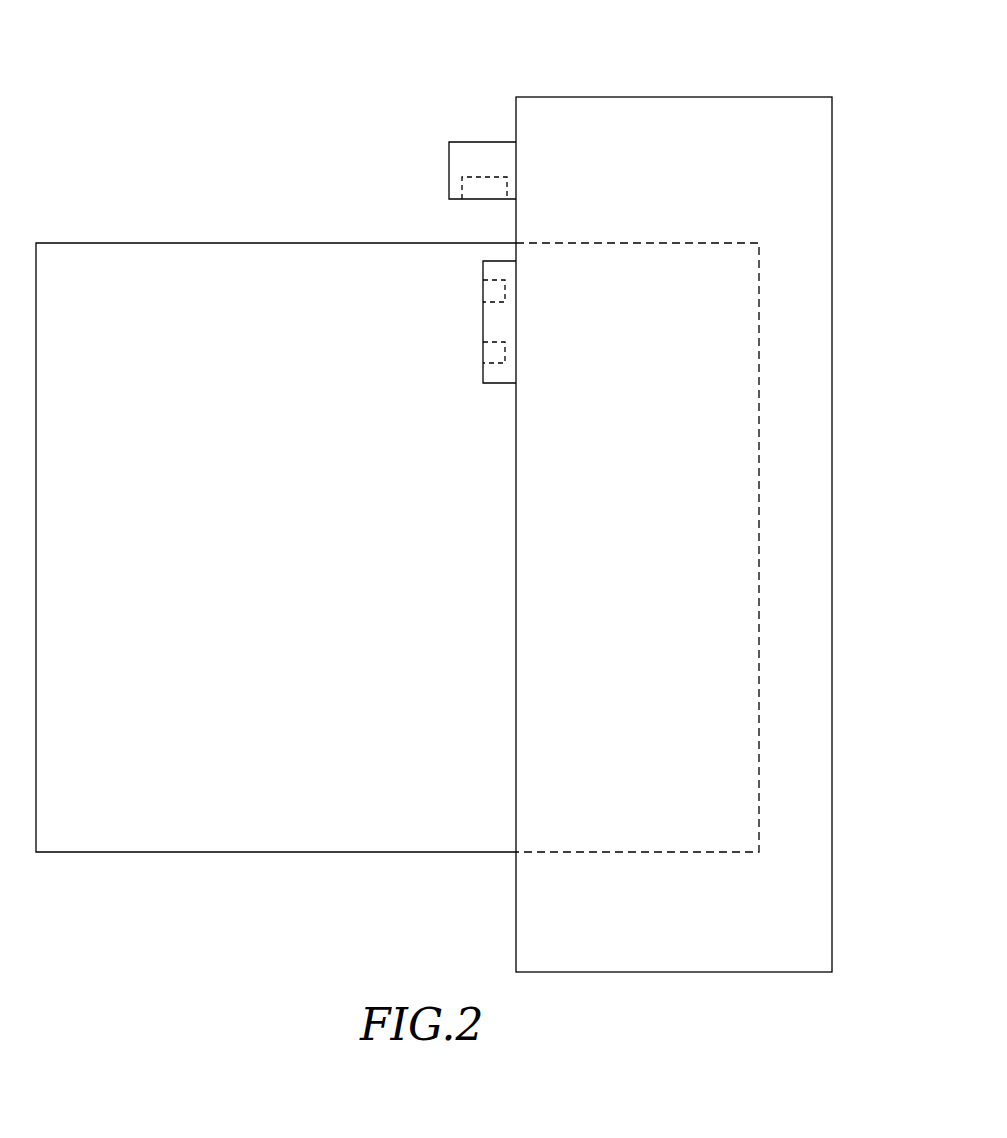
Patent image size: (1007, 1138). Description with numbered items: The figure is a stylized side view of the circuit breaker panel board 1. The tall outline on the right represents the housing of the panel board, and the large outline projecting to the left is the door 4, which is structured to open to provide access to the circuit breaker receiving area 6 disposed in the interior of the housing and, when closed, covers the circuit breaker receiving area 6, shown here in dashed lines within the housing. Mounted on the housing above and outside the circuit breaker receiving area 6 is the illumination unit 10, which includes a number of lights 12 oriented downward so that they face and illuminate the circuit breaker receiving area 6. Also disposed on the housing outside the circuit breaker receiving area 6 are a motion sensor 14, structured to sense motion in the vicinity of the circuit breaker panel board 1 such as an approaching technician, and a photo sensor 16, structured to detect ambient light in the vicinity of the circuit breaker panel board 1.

The circuit breaker panel board 1 is at (745, 90).
The door 4 is at (200, 243).
The circuit breaker receiving area 6 is at (682, 243).
The illumination unit 10 is at (473, 142).
The lights 12 is at (472, 177).
The motion sensor 14 is at (483, 291).
The photo sensor 16 is at (483, 351).